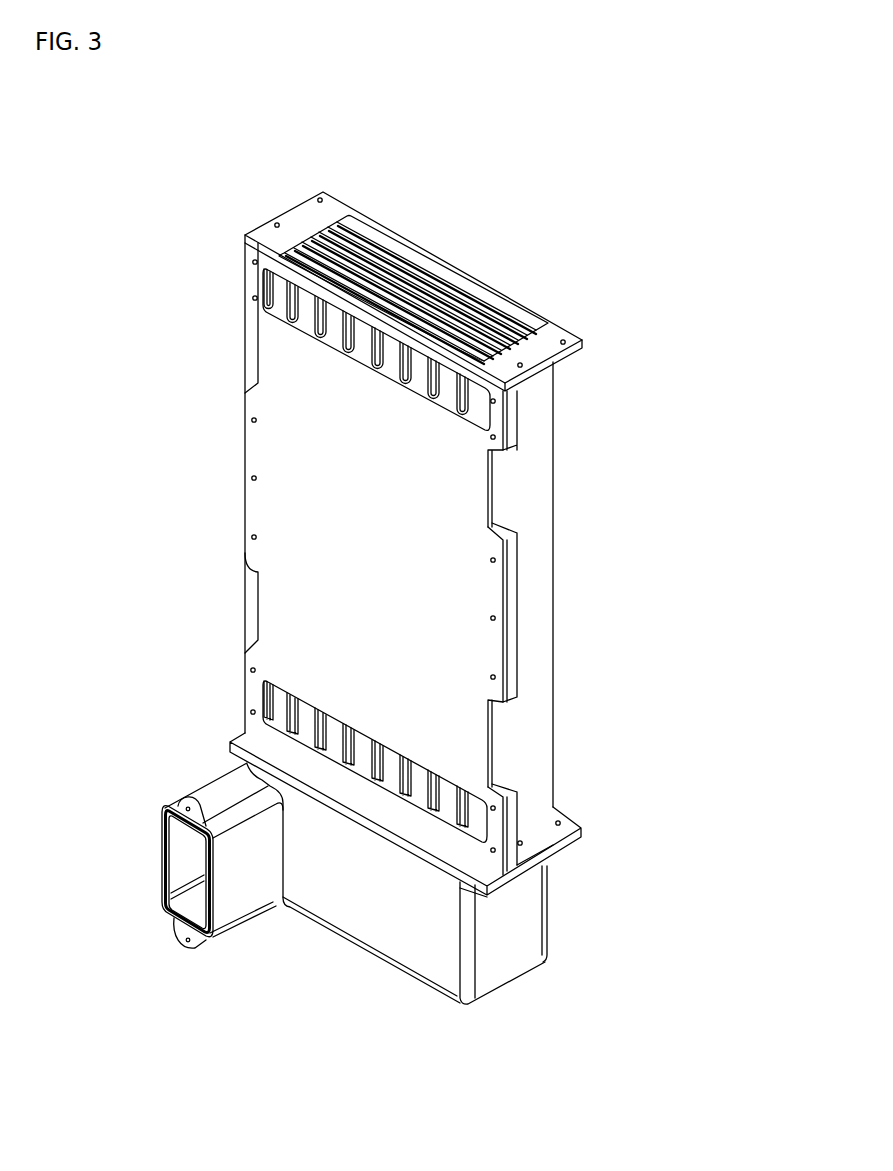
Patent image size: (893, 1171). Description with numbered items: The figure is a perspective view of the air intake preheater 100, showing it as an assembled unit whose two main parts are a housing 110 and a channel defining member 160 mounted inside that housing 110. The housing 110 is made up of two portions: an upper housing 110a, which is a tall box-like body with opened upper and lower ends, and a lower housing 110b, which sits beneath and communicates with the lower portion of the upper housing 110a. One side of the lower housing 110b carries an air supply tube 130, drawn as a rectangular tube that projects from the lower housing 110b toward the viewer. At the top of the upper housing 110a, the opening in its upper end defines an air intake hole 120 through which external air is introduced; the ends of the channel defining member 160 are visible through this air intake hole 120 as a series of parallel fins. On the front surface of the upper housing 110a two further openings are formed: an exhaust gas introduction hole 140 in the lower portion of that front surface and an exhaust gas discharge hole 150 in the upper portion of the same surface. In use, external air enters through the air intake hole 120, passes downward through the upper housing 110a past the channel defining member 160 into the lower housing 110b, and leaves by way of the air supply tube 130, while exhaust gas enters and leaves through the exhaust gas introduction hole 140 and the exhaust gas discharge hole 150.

The air intake preheater 100 is at (158, 138).
The housing 110 is at (718, 823).
The upper housing 110a is at (545, 777).
The lower housing 110b is at (530, 925).
The air intake hole 120 is at (397, 230).
The air supply tube 130 is at (182, 863).
The exhaust gas introduction hole 140 is at (270, 701).
The exhaust gas discharge hole 150 is at (273, 287).
The channel defining member 160 is at (465, 302).